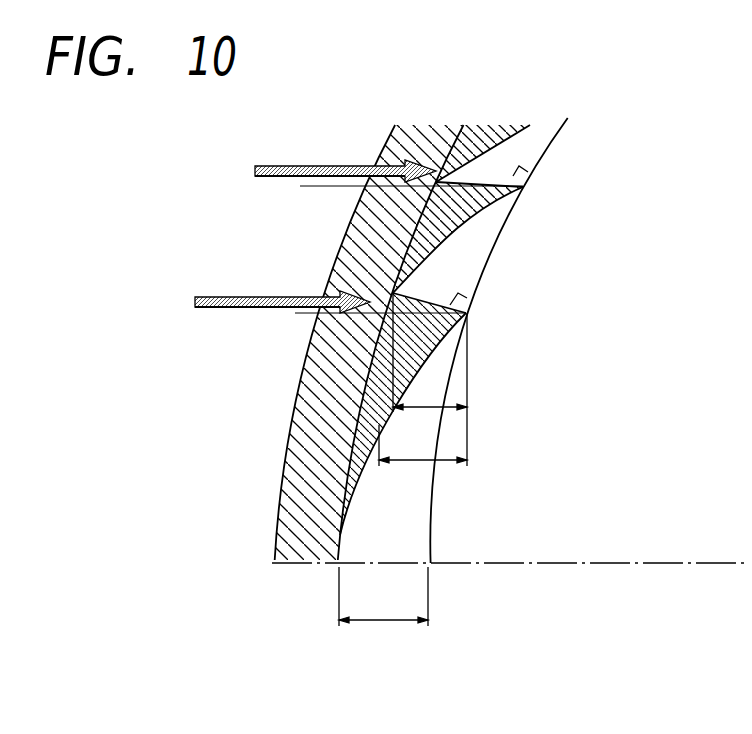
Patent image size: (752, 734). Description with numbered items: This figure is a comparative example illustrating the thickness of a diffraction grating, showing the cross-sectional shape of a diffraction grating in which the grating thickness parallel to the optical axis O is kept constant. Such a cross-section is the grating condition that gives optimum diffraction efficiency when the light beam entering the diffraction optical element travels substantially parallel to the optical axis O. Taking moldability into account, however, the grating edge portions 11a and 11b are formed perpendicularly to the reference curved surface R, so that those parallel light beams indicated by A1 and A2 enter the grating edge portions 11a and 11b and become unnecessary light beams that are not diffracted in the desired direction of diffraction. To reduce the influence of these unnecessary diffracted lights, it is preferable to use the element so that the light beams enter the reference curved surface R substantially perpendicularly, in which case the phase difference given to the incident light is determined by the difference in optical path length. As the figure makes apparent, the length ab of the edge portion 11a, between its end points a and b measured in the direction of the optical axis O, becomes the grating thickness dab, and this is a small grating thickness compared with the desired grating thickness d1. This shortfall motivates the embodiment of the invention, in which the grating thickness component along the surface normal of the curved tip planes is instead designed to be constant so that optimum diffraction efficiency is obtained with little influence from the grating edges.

The reference curved surface R is at (459, 128).
The grating edge portion 11b is at (493, 167).
The grating edge portion 11a is at (462, 289).
The end point of edge portion a is at (394, 292).
The end point of edge portion b is at (466, 313).
The grating thickness dab is at (430, 395).
The desired grating thickness d1 is at (403, 525).
The optical axis O is at (505, 563).
The parallel light beam A1 is at (330, 290).
The parallel light beam A2 is at (372, 171).